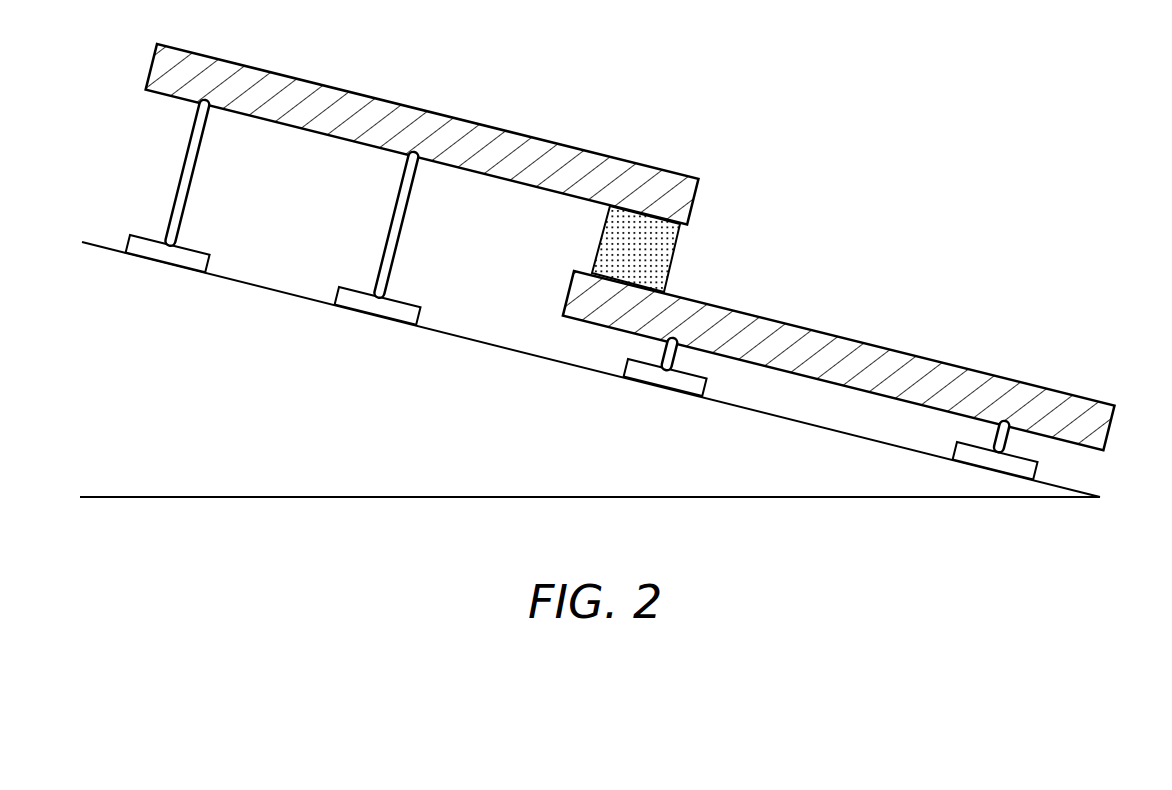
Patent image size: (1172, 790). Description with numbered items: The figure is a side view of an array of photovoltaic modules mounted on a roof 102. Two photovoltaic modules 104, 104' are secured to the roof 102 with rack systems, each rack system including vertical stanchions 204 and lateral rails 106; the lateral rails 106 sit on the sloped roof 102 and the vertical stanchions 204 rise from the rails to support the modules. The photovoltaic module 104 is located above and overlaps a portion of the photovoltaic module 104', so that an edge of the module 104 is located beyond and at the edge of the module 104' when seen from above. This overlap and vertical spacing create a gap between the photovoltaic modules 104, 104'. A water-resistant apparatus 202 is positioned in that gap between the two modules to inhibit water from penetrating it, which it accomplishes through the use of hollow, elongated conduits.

The roof 102 is at (282, 457).
The photovoltaic module 104 is at (448, 134).
The photovoltaic module 104' is at (867, 360).
The lateral rails 106 is at (127, 245).
The water-resistant apparatus 202 is at (675, 258).
The vertical stanchions 204 is at (190, 185).